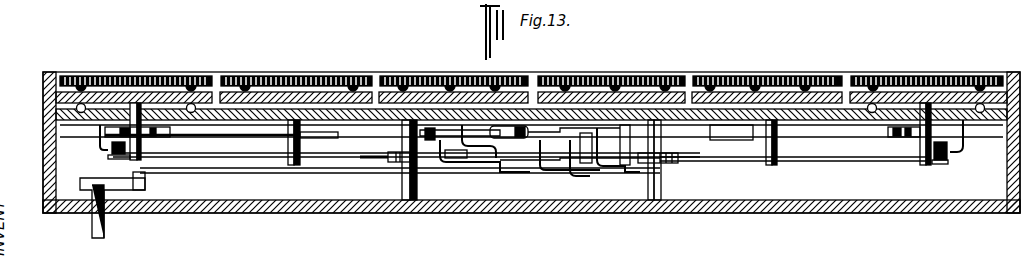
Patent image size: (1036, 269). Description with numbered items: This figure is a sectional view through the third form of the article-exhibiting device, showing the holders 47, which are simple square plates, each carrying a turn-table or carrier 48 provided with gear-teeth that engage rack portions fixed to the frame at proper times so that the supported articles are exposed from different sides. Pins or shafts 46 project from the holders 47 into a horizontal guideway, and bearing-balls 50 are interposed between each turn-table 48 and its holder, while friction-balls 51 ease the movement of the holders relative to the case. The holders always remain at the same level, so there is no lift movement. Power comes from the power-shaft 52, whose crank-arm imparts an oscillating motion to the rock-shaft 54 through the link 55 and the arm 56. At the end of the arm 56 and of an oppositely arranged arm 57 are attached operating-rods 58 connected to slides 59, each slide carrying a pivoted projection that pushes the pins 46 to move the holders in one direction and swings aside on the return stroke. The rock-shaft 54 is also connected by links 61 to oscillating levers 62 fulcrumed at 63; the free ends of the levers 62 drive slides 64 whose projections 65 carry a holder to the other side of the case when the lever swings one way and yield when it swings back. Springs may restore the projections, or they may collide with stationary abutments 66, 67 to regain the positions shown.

The pins or shafts 46 is at (150, 147).
The holders 47 is at (558, 92).
The turn-table or carrier 48 is at (180, 76).
The bearing-balls 50 is at (52, 90).
The friction-balls 51 is at (54, 118).
The power-shaft 52 is at (106, 231).
The rock-shaft 54 is at (525, 192).
The link 55 is at (340, 173).
The arm 56 is at (608, 172).
The arm 57 is at (450, 165).
The operating-rods 58 is at (834, 140).
The slides 59 is at (160, 131).
The links 61 is at (478, 162).
The oscillating levers 62 is at (232, 158).
The fulcrum 63 is at (395, 163).
The slides 64 is at (108, 151).
The projections 65 is at (924, 166).
The stationary abutment 66 is at (338, 140).
The stationary abutment 67 is at (100, 135).